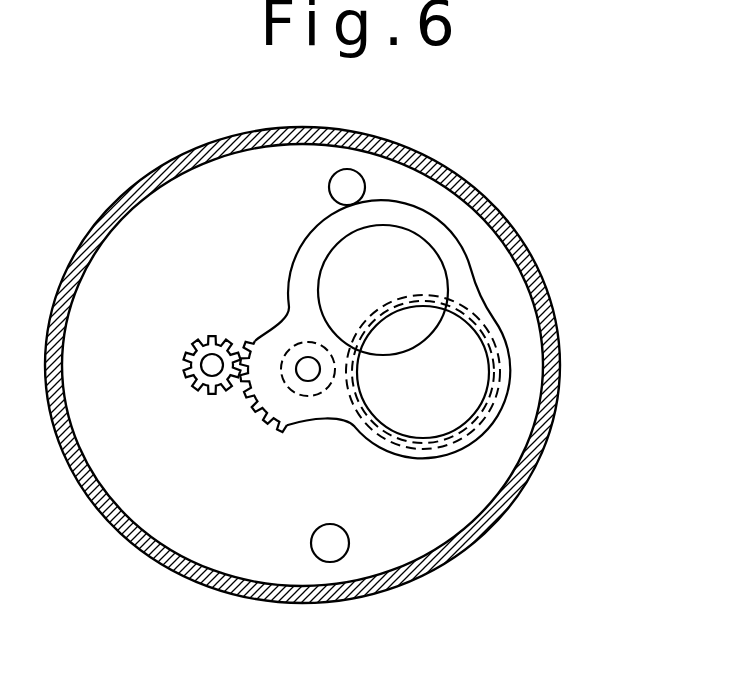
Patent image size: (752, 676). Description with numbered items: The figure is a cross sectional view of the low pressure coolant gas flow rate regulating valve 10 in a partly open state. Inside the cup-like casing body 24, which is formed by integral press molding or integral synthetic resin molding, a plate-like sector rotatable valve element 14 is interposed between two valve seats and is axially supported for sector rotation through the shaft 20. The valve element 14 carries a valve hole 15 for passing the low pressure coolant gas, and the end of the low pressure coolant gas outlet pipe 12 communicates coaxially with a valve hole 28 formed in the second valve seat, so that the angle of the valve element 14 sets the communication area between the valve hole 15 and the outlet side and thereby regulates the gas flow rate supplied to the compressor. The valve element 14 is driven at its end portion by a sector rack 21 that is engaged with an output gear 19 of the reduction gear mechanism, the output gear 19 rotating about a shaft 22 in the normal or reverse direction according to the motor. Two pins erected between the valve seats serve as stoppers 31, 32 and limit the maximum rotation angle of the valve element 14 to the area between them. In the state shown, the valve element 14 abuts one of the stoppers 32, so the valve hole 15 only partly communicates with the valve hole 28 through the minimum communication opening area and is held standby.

The low pressure coolant gas flow rate regulating valve 10 is at (127, 149).
The low pressure coolant gas outlet pipe 12 is at (502, 416).
The sector rotatable valve element 14 is at (478, 285).
The valve hole 15 is at (430, 250).
The output gear 19 is at (207, 396).
The shaft 20 is at (303, 356).
The sector rack 21 is at (243, 399).
The shaft 22 is at (198, 344).
The casing body 24 is at (530, 487).
The valve hole 28 is at (494, 340).
The stopper 31 is at (337, 536).
The stopper 32 is at (329, 189).